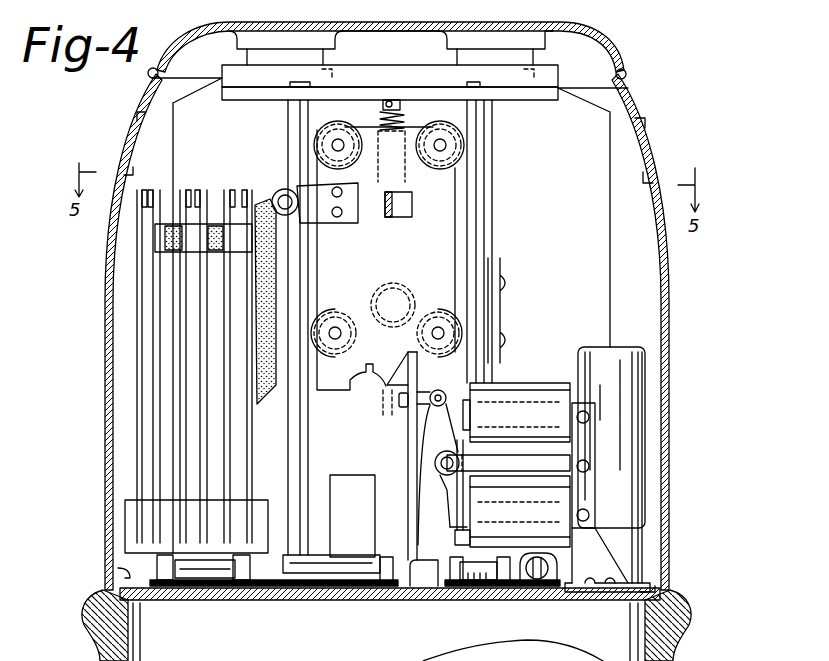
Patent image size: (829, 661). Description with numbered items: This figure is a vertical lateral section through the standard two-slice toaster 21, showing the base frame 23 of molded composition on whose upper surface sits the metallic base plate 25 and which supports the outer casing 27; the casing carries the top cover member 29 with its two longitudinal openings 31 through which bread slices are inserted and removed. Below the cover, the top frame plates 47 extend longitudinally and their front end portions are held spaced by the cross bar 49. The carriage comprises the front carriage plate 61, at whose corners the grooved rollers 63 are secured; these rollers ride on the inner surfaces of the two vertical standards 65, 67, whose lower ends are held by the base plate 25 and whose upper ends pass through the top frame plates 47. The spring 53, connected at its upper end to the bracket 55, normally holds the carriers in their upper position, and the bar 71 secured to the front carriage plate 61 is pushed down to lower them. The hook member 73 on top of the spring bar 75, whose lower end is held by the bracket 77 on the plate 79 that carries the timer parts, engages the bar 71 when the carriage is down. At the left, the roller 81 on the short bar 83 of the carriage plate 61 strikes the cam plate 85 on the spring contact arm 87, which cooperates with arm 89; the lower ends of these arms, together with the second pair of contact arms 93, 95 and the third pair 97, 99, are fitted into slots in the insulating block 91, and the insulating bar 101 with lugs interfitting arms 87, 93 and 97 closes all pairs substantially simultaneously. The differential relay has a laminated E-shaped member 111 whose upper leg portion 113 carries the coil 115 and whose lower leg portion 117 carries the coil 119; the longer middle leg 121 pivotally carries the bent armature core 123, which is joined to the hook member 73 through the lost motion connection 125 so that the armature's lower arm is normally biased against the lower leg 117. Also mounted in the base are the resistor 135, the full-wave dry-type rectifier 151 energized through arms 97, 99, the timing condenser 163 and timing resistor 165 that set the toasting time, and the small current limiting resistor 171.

The two-slice toaster 21 is at (715, 300).
The base frame 23 is at (103, 637).
The base plate 25 is at (312, 601).
The outer casing 27 is at (105, 374).
The top cover member 29 is at (618, 54).
The longitudinal openings 31 is at (290, 30).
The top frame plates 47 is at (432, 64).
The cross bar 49 is at (522, 99).
The spring 53 is at (381, 113).
The bracket 55 is at (402, 111).
The front carriage plate 61 is at (455, 232).
The grooved rollers 63 is at (465, 160).
The vertical standard 65 is at (287, 127).
The vertical standard 67 is at (493, 196).
The bar 71 is at (395, 221).
The hook member 73 is at (401, 374).
The spring bar 75 is at (407, 441).
The bracket 77 is at (418, 587).
The plate 79 is at (118, 568).
The roller 81 is at (281, 189).
The short bar 83 is at (322, 226).
The cam plate 85 is at (278, 291).
The spring contact arm 87 is at (251, 188).
The spring contact arm 89 is at (227, 186).
The block 91 is at (262, 498).
The spring contact arm 93 is at (205, 188).
The spring contact arm 95 is at (182, 186).
The spring contact arm 97 is at (158, 188).
The spring contact arm 99 is at (138, 186).
The bar of electric-insulating material 101 is at (222, 185).
The E-shaped member 111 is at (596, 447).
The upper leg portion 113 is at (563, 382).
The coil 115 is at (510, 382).
The lower leg portion 117 is at (458, 538).
The coil 119 is at (570, 587).
The middle leg 121 is at (450, 486).
The armature core 123 is at (450, 520).
The lost motion connection 125 is at (434, 463).
The resistor 135 is at (215, 584).
The full-wave dry-type rectifier 151 is at (340, 475).
The timing condenser 163 is at (620, 349).
The timing resistor 165 is at (344, 553).
The current limiting resistor 171 is at (490, 587).